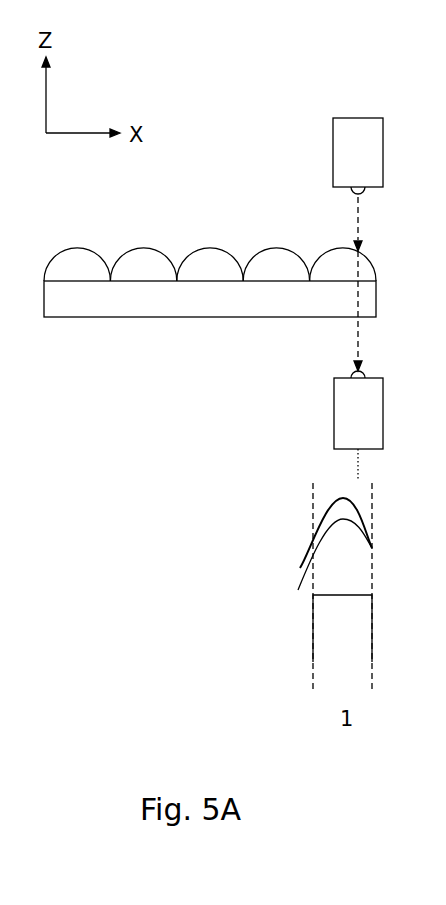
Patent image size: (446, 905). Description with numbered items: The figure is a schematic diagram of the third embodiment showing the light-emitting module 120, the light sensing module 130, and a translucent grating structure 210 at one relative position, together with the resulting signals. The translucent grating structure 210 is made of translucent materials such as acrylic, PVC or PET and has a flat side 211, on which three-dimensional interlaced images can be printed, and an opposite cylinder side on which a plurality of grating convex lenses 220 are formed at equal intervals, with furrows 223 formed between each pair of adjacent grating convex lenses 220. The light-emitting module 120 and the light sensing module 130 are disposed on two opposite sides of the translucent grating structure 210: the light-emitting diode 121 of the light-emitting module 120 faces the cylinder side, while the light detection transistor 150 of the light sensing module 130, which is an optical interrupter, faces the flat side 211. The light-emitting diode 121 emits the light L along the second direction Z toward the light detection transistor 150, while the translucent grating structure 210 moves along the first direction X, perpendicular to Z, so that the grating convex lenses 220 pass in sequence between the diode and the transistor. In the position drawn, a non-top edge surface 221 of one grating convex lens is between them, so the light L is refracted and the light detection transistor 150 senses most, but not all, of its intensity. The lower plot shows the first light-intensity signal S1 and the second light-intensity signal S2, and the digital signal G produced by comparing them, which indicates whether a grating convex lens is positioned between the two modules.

The light-emitting module 120 is at (357, 122).
The light-emitting diode 121 is at (350, 192).
The light sensing module 130 is at (350, 413).
The light detection transistor 150 is at (350, 376).
The translucent grating structure 210 is at (190, 310).
The flat side 211 is at (236, 286).
The grating convex lenses 220 is at (205, 256).
The non-top edge surface 221 is at (362, 250).
The furrows 223 is at (243, 281).
The light L is at (357, 325).
The first light-intensity signal S1 is at (300, 587).
The second light-intensity signal S2 is at (300, 567).
The digital signal G is at (313, 656).